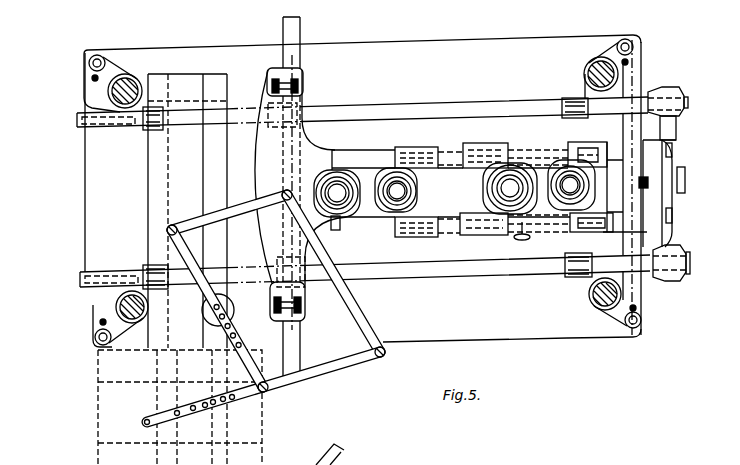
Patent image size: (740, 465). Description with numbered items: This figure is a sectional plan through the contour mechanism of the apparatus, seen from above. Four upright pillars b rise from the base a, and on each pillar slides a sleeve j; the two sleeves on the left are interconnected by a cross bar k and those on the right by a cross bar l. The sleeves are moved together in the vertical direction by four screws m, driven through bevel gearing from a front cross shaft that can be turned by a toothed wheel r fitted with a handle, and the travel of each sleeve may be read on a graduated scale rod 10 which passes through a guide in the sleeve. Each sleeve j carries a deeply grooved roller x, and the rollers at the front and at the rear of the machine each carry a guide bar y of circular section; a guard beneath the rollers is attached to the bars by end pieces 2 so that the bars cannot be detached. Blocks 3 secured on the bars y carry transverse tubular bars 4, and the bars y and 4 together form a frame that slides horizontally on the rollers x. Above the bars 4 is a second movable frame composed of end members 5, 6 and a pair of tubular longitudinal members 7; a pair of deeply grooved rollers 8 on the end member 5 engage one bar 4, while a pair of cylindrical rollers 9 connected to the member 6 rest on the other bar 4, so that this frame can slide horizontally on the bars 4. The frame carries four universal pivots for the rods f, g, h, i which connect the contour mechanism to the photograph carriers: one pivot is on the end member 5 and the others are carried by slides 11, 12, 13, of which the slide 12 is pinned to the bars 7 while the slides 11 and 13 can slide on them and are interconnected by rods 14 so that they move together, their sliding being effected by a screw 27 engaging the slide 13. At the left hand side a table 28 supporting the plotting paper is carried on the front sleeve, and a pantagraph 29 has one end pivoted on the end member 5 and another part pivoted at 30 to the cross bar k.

The end pieces 2 is at (82, 130).
The blocks 3 is at (267, 132).
The transverse bars 4 is at (300, 37).
The end member 5 is at (315, 144).
The end member 6 is at (660, 170).
The longitudinal members 7 is at (364, 150).
The deeply grooved rollers 8 is at (273, 75).
The cylindrical rollers 9 is at (672, 150).
The graduated scale rod 10 is at (92, 78).
The slide 11 is at (421, 147).
The slide 12 is at (489, 143).
The slide 13 is at (570, 142).
The rods 14 is at (455, 150).
The screw 27 is at (683, 194).
The table 28 is at (108, 413).
The pantagraph 29 is at (346, 366).
The pivot 30 is at (233, 315).
The base a is at (438, 52).
The upright pillars b is at (132, 80).
The rod f is at (337, 193).
The rod g is at (510, 188).
The rod h is at (397, 191).
The rod i is at (570, 185).
The sleeve j is at (107, 100).
The cross bar k is at (163, 178).
The cross bar l is at (630, 118).
The screws m is at (100, 55).
The toothed wheel r is at (538, 235).
The roller x is at (150, 132).
The guide bar y is at (417, 110).